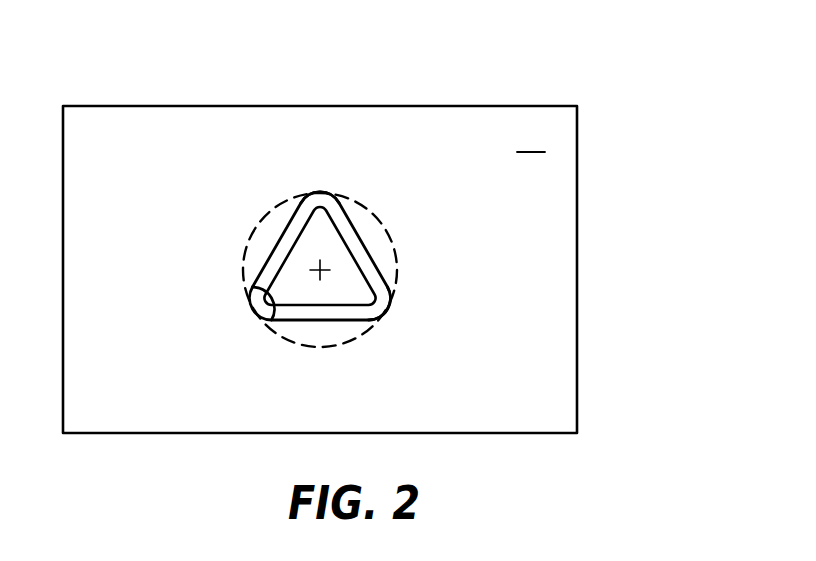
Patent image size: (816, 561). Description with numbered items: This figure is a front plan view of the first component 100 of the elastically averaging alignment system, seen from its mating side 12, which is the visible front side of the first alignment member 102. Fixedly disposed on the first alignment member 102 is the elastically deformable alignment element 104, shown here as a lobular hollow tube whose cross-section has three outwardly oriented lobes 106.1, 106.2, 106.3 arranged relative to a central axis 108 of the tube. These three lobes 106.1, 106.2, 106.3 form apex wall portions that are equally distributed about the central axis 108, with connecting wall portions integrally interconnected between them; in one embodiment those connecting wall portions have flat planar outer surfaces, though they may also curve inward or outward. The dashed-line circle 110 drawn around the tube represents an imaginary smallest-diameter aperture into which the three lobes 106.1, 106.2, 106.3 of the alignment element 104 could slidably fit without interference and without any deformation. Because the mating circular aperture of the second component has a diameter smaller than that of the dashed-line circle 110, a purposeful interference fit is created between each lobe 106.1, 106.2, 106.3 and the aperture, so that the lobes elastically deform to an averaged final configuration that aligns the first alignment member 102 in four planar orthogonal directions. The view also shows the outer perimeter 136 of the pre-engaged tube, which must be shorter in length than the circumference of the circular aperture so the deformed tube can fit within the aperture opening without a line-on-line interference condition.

The first component 100 is at (492, 103).
The first alignment member 102 is at (577, 163).
The mating side of the first alignment member 12 is at (531, 137).
The elastically deformable alignment element 104 is at (364, 239).
The outwardly oriented lobe 106.1 is at (254, 305).
The outwardly oriented lobe 106.2 is at (320, 190).
The outwardly oriented lobe 106.3 is at (387, 308).
The central axis 108 is at (317, 267).
The dashed-line circle 110 is at (263, 220).
The outer perimeter 136 is at (322, 321).